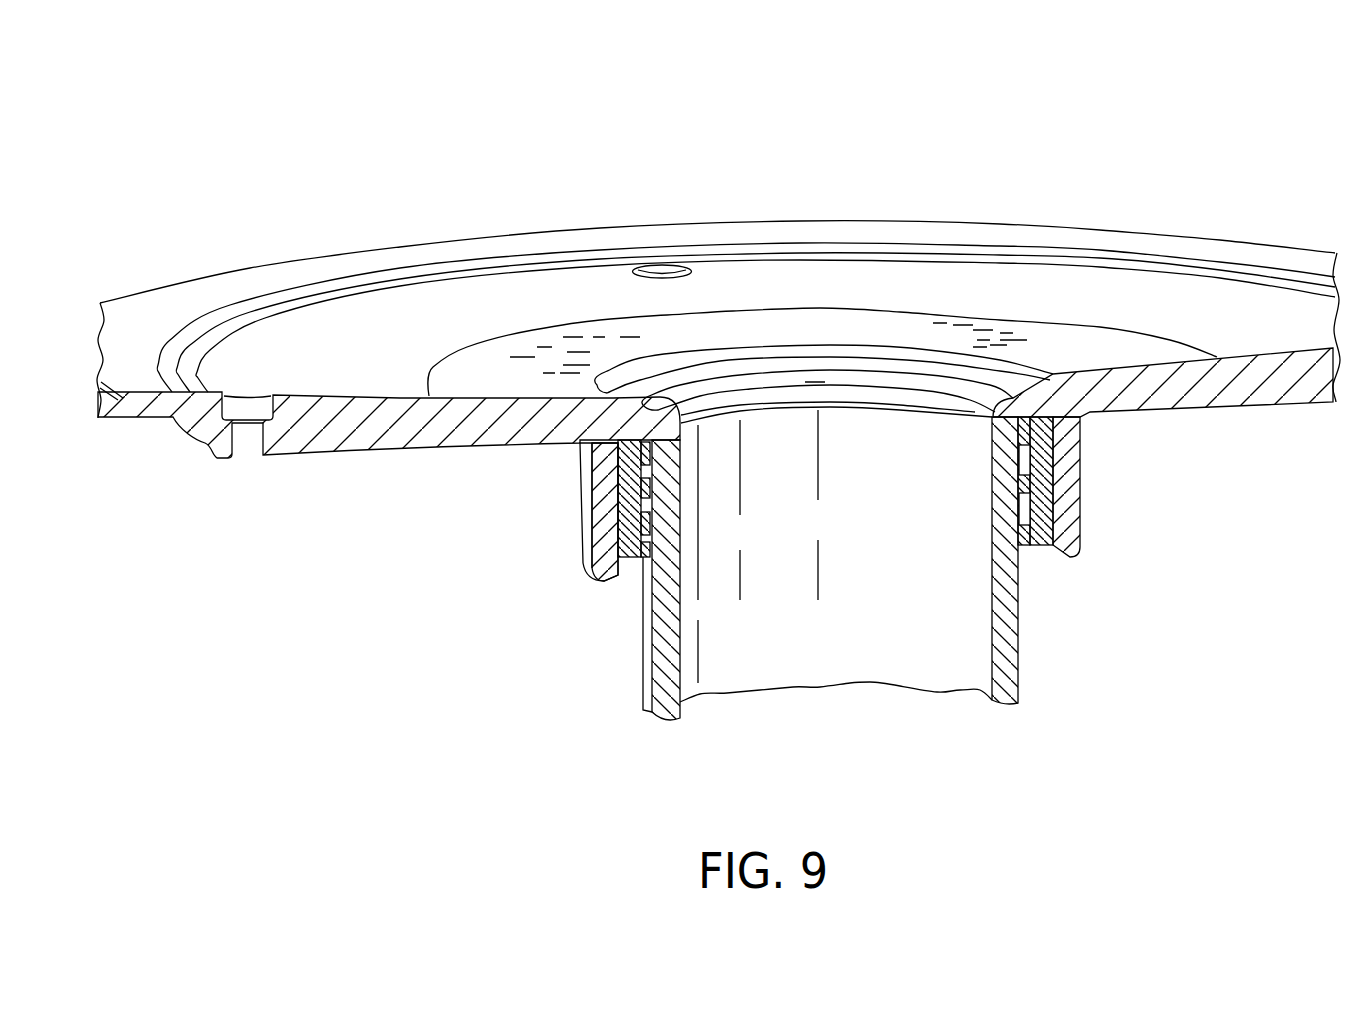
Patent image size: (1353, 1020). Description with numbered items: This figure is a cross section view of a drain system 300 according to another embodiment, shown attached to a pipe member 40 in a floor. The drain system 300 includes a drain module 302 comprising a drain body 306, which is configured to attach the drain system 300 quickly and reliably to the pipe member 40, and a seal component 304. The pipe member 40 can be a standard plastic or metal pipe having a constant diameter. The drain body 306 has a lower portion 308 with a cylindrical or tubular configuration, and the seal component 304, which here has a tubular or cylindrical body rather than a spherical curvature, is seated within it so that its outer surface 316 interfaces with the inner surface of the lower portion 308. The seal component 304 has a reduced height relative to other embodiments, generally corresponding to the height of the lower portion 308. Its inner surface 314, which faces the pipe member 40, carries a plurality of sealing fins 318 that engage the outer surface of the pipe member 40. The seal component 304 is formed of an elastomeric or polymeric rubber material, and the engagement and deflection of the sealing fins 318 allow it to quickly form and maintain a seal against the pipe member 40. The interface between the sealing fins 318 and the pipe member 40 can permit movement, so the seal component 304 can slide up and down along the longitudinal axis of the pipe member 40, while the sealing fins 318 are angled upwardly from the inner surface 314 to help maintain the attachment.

The drain system 300 is at (1158, 195).
The drain module 302 is at (768, 202).
The seal component 304 is at (1062, 498).
The drain body 306 is at (350, 222).
The lower portion 308 is at (582, 552).
The inner surface 314 is at (1035, 466).
The outer surface 316 is at (618, 487).
The sealing fins 318 is at (1012, 484).
The pipe member 40 is at (848, 622).